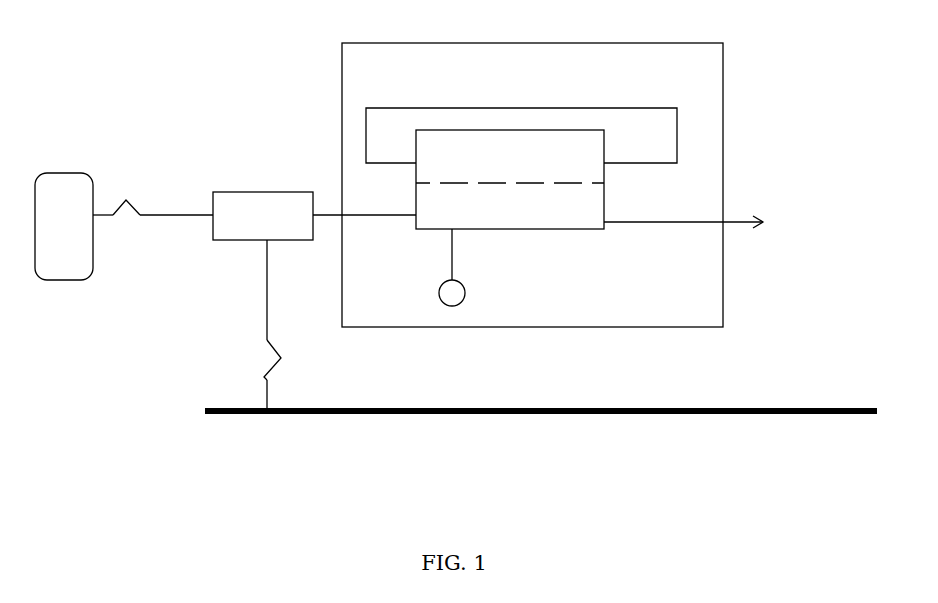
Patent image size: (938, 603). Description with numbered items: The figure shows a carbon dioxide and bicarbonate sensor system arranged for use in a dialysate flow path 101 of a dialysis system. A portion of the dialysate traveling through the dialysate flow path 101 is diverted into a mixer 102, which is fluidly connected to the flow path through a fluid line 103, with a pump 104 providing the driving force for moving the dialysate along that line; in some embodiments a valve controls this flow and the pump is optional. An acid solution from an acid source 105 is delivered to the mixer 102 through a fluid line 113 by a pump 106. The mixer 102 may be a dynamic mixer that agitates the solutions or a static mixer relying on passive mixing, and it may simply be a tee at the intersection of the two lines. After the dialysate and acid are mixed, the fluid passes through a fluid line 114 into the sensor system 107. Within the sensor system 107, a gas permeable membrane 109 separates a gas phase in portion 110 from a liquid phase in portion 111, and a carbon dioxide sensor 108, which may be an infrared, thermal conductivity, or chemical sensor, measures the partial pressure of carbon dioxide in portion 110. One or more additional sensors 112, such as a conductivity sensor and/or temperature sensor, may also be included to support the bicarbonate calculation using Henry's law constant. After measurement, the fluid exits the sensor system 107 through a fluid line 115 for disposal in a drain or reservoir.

The dialysate flow path 101 is at (562, 412).
The mixer 102 is at (263, 216).
The fluid line 103 is at (267, 292).
The pump 104 is at (265, 357).
The acid source 105 is at (64, 226).
The pump 106 is at (128, 218).
The sensor system 107 is at (543, 42).
The carbon dioxide sensor 108 is at (588, 120).
The gas permeable membrane 109 is at (583, 187).
The portion 110 is at (510, 179).
The portion 111 is at (510, 206).
The additional sensors 112 is at (467, 292).
The fluid line 113 is at (182, 215).
The fluid line 114 is at (330, 215).
The fluid line 115 is at (737, 227).